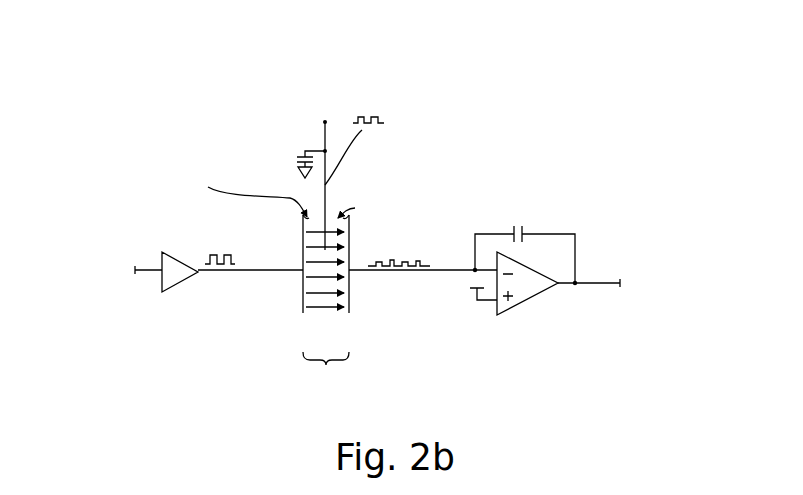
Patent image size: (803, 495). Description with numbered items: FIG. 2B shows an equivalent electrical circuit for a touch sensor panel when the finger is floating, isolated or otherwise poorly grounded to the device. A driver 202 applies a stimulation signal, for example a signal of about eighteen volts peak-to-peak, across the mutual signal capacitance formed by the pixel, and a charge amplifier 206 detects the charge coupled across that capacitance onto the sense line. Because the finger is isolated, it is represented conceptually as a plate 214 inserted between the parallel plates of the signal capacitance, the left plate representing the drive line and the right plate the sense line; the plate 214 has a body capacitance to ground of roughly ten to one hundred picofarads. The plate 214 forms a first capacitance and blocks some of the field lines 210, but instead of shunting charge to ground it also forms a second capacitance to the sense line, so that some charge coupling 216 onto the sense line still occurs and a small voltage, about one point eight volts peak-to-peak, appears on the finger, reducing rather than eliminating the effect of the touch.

The driver 202 is at (174, 290).
The charge amplifier 206 is at (530, 297).
The field lines 210 is at (325, 312).
The plate 214 is at (325, 122).
The charge coupling 216 is at (352, 238).